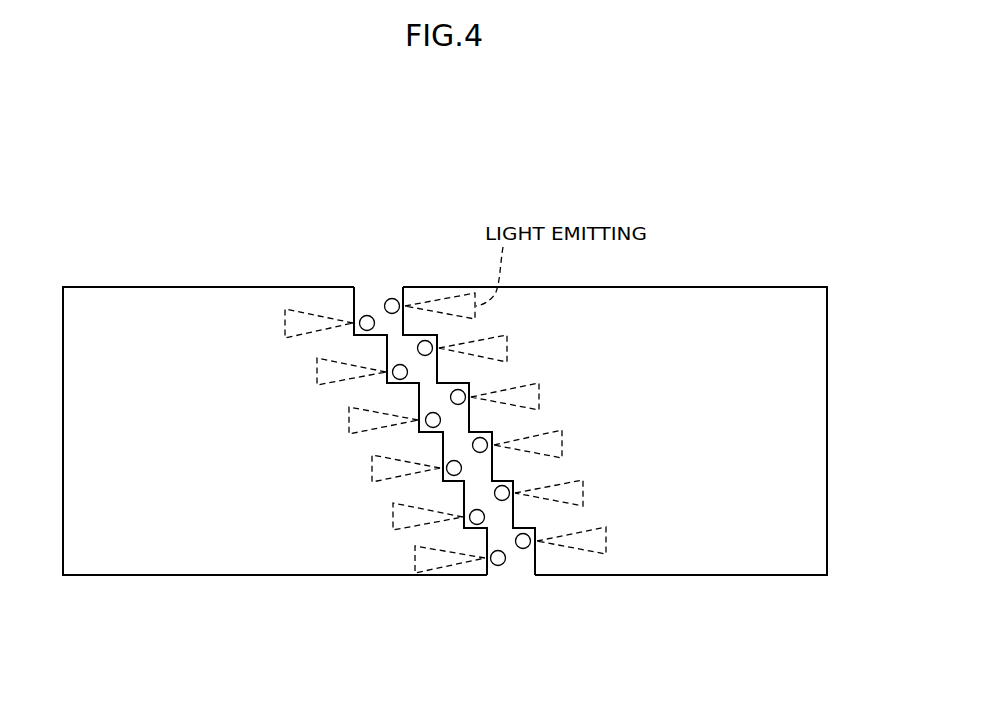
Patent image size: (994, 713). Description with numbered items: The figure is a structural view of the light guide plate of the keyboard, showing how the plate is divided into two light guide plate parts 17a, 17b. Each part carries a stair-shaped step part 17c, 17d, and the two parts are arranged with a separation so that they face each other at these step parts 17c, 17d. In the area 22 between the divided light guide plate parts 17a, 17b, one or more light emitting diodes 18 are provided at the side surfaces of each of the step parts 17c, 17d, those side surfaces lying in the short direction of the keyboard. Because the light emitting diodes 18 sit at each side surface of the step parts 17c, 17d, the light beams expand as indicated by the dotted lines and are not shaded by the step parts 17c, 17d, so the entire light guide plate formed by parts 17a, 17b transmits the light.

The light guide plate part 17a is at (245, 576).
The light guide plate part 17b is at (672, 576).
The step part 17c is at (490, 578).
The step part 17d is at (528, 574).
The light emitting diodes 18 is at (399, 300).
The area 22 is at (459, 446).